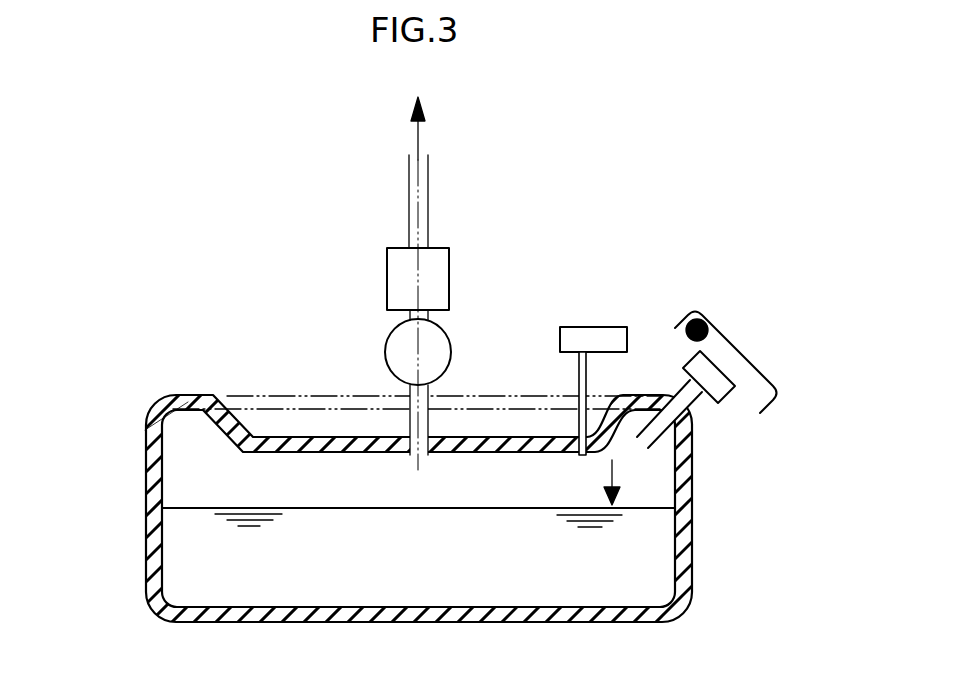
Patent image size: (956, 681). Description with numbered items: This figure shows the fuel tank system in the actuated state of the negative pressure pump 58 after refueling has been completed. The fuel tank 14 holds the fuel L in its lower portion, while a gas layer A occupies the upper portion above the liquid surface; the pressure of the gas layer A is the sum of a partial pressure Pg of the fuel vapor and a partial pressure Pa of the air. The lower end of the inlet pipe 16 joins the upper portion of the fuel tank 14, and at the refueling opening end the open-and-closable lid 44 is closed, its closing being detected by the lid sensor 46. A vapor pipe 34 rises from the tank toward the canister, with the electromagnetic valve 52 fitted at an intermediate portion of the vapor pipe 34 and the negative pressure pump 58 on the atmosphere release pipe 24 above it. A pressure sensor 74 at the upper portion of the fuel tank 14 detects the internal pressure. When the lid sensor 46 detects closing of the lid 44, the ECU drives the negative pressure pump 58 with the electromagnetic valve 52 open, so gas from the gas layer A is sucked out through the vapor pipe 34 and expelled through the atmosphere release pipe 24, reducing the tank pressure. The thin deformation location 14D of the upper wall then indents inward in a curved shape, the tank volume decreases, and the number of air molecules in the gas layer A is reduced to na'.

The fuel tank 14 is at (147, 532).
The deformation location 14D is at (515, 430).
The inlet pipe 16 is at (697, 403).
The atmosphere release pipe 24 is at (428, 178).
The vapor pipe 34 is at (407, 422).
The lid 44 is at (740, 342).
The lid sensor 46 is at (707, 317).
The electromagnetic valve 52 is at (450, 333).
The negative pressure pump 58 is at (450, 245).
The pressure sensor 74 is at (620, 325).
The gas layer A is at (197, 440).
The fuel L is at (650, 548).
The partial pressure of the fuel vapor Pg is at (351, 482).
The partial pressure of the air Pa is at (587, 482).
The number of air molecules na' is at (706, 499).